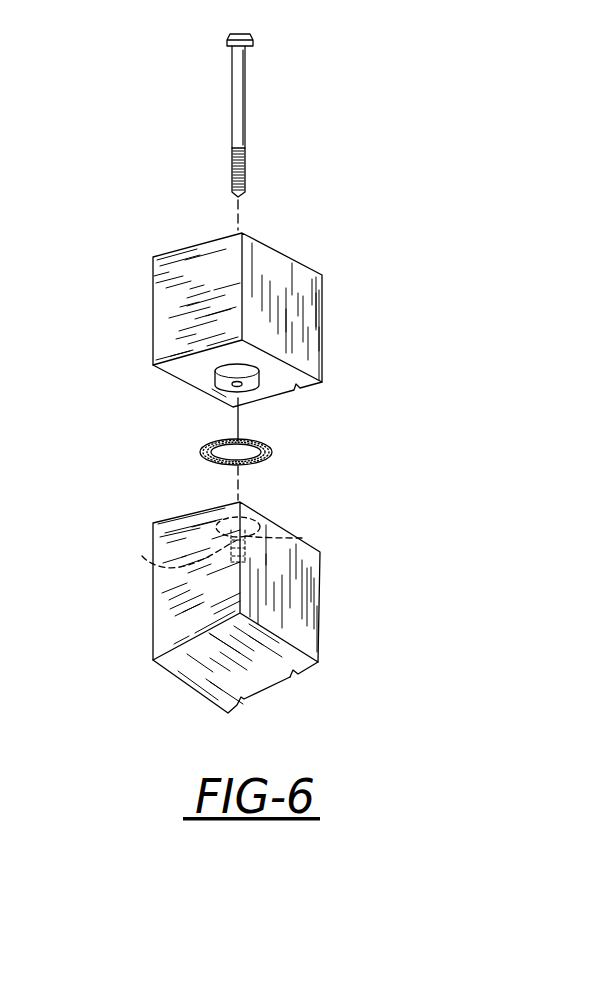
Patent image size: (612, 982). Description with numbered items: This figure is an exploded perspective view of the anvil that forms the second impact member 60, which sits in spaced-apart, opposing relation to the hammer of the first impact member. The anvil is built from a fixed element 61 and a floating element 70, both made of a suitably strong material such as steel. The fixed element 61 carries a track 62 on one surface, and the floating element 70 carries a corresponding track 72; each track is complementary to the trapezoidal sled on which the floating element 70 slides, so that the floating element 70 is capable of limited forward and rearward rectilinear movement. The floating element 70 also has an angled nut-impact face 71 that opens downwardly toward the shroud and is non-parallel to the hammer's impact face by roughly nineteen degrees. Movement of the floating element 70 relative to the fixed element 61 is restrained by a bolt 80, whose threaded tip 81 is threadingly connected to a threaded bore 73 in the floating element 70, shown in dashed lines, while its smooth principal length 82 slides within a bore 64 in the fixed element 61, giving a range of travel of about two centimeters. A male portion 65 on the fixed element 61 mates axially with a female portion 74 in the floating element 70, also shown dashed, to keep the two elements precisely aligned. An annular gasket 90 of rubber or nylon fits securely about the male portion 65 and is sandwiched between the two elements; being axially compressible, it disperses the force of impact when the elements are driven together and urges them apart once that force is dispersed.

The second impact member 60 is at (214, 385).
The fixed element 61 is at (271, 335).
The track 62 is at (281, 392).
The bore 64 is at (256, 396).
The male portion 65 is at (212, 389).
The floating element 70 is at (243, 630).
The nut-impact face 71 is at (193, 673).
The track 72 is at (268, 695).
The threaded bore 73 is at (142, 556).
The female portion 74 is at (303, 538).
The bolt 80 is at (255, 104).
The threaded tip 81 is at (247, 183).
The principal length 82 is at (232, 104).
The annular gasket 90 is at (268, 465).